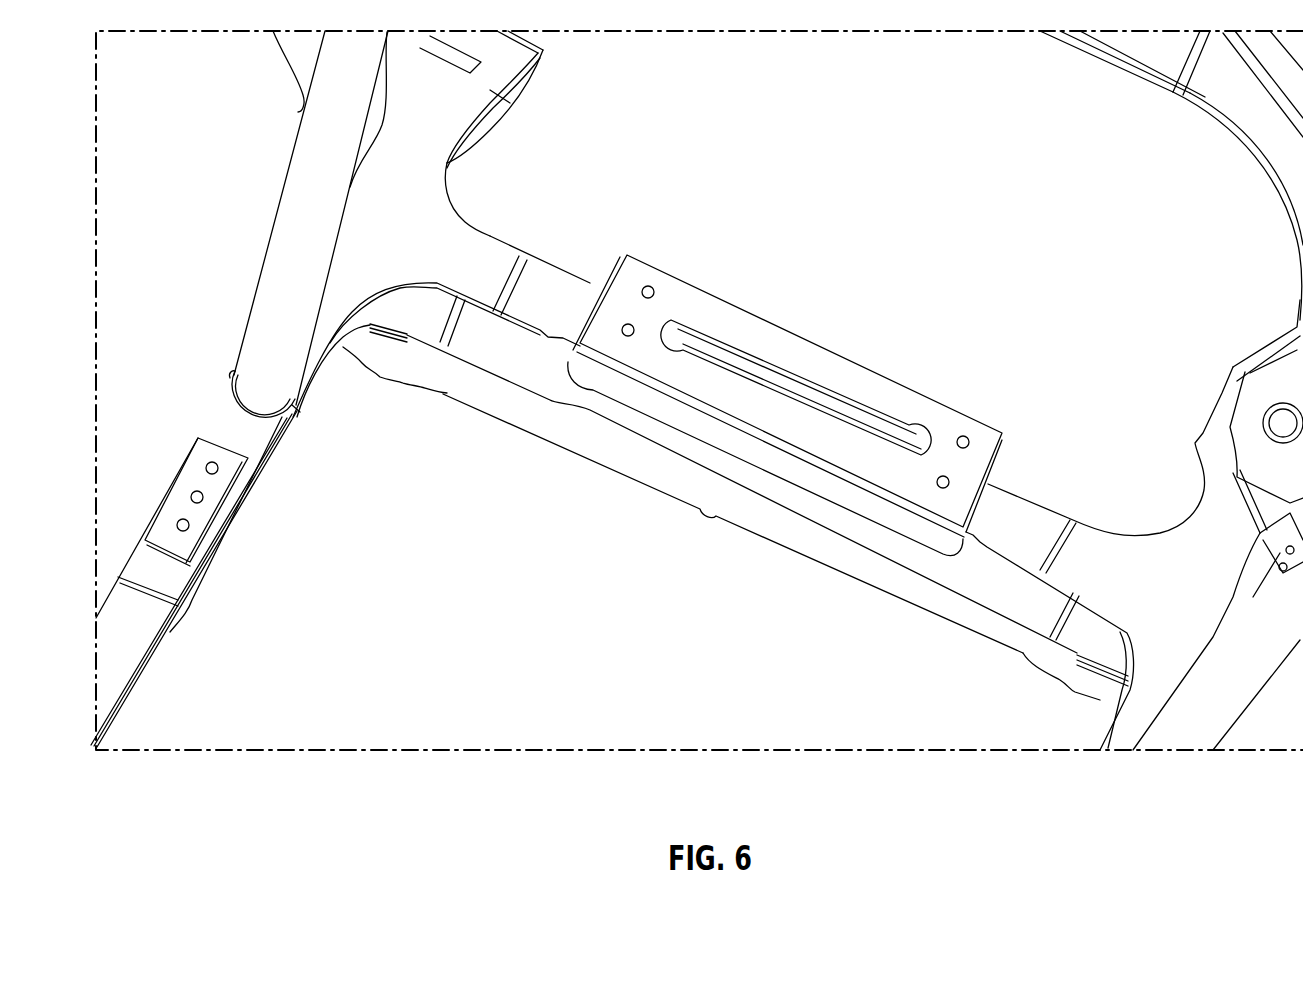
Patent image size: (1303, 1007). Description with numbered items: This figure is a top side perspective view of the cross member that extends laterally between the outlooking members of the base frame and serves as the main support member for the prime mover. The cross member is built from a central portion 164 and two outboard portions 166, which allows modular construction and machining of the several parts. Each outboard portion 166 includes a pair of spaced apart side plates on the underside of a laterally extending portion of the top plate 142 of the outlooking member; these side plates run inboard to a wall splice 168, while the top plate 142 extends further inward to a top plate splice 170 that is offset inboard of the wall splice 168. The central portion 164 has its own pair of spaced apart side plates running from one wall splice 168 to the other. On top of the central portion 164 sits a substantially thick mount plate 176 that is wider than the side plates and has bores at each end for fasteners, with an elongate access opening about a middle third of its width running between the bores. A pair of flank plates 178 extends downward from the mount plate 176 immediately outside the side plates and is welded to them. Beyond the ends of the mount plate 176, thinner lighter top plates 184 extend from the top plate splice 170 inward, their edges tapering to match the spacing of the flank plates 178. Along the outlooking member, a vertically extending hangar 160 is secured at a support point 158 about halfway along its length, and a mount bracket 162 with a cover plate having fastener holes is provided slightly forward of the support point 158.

The top plate 142 is at (430, 110).
The support point 158 is at (293, 410).
The hangar 160 is at (287, 242).
The mount bracket 162 is at (178, 500).
The central portion 164 is at (749, 505).
The outboard portions 166 is at (721, 540).
The wall splice 168 is at (457, 322).
The top plate splice 170 is at (522, 260).
The mount plate 176 is at (948, 420).
The flank plates 178 is at (742, 447).
The lighter top plates 184 is at (563, 290).